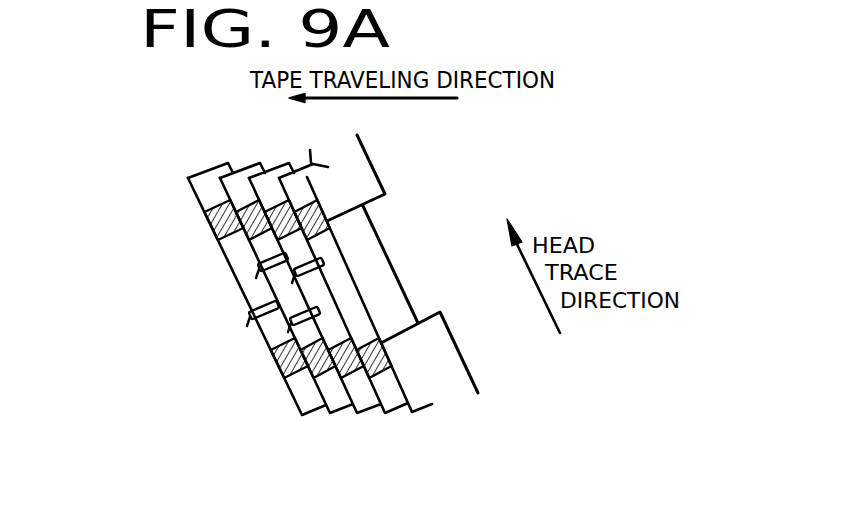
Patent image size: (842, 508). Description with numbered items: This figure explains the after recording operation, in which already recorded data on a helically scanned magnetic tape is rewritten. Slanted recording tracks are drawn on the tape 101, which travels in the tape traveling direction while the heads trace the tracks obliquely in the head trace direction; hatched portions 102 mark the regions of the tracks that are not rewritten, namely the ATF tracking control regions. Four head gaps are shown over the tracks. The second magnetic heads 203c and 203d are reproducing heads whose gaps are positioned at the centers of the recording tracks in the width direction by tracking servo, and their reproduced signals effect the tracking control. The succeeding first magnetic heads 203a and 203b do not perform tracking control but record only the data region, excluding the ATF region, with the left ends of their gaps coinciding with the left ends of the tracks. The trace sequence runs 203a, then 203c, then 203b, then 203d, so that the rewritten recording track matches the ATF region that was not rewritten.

The magnetic tape 101 is at (205, 166).
The recorded track area 102 is at (212, 230).
The first magnetic head 203a is at (292, 283).
The first magnetic head 203b is at (288, 332).
The second magnetic head 203c is at (247, 326).
The second magnetic head 203d is at (262, 264).